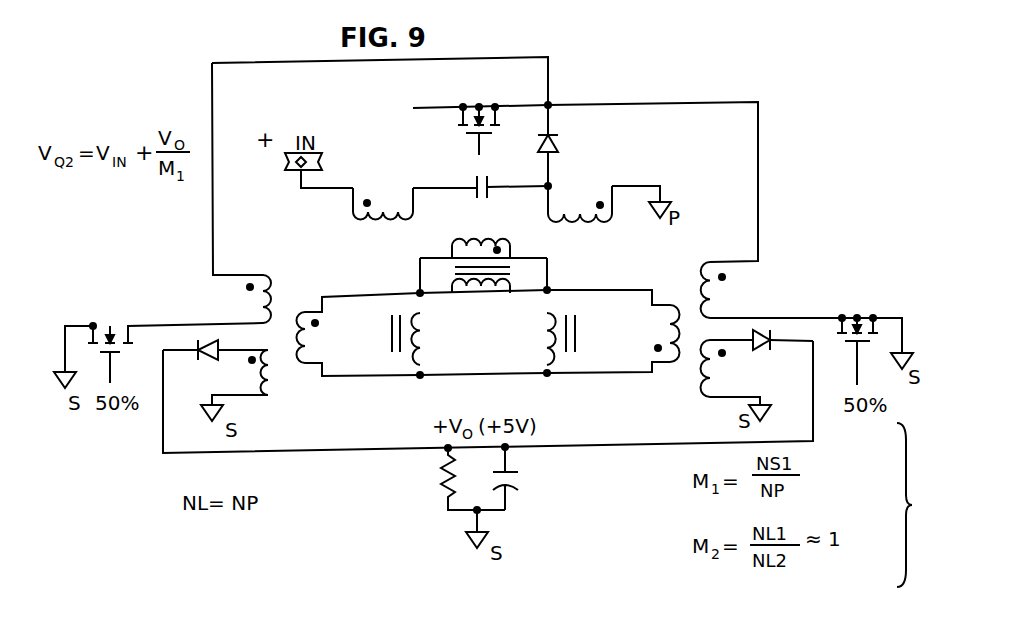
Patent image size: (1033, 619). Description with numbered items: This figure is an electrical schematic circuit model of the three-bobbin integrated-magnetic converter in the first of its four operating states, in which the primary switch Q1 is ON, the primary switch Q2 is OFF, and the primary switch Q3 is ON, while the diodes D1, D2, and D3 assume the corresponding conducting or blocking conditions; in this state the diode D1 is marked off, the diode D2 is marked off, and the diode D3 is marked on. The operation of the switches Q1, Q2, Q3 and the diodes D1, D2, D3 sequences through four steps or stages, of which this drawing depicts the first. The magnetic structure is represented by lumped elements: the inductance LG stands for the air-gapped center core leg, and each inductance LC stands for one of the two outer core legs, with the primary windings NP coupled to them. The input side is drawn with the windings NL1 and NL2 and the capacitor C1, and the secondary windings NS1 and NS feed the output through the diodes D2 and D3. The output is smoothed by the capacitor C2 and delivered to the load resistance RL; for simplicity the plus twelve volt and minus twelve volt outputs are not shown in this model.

The primary switch Q1 is at (502, 119).
The primary switch Q2 is at (108, 324).
The primary switch Q3 is at (874, 333).
The diode D1 is at (573, 145).
The diode D2 is at (221, 343).
The diode D3 is at (782, 348).
The capacitor C1 is at (555, 242).
The output capacitor C2 is at (515, 478).
The load resistor RL is at (452, 479).
The winding NL1 is at (378, 108).
The winding NL2 is at (646, 136).
The primary winding NP is at (872, 226).
The secondary winding NS1 is at (308, 410).
The secondary winding NS is at (728, 368).
The inductance of the air-gapped center core leg LG is at (489, 301).
The inductance of the outer core leg LC is at (483, 339).